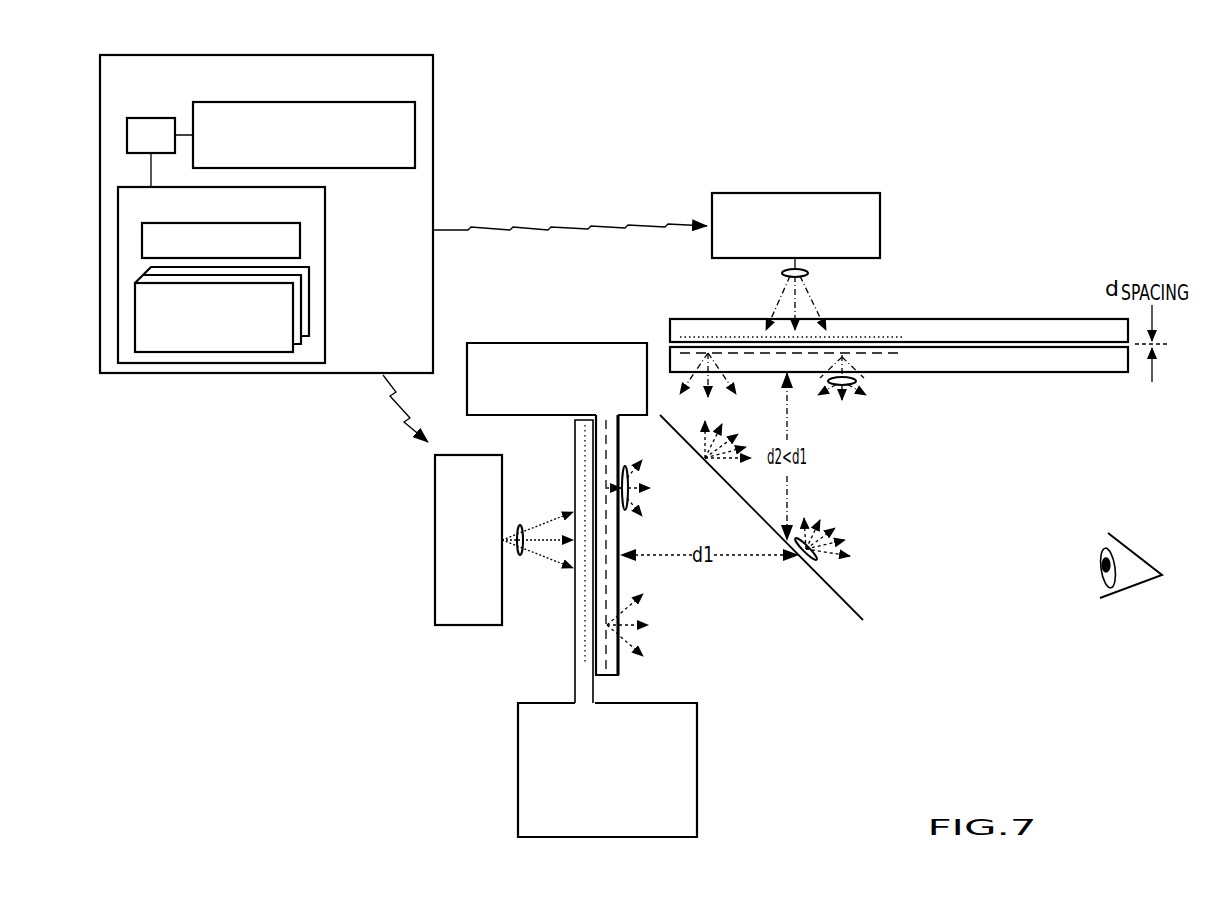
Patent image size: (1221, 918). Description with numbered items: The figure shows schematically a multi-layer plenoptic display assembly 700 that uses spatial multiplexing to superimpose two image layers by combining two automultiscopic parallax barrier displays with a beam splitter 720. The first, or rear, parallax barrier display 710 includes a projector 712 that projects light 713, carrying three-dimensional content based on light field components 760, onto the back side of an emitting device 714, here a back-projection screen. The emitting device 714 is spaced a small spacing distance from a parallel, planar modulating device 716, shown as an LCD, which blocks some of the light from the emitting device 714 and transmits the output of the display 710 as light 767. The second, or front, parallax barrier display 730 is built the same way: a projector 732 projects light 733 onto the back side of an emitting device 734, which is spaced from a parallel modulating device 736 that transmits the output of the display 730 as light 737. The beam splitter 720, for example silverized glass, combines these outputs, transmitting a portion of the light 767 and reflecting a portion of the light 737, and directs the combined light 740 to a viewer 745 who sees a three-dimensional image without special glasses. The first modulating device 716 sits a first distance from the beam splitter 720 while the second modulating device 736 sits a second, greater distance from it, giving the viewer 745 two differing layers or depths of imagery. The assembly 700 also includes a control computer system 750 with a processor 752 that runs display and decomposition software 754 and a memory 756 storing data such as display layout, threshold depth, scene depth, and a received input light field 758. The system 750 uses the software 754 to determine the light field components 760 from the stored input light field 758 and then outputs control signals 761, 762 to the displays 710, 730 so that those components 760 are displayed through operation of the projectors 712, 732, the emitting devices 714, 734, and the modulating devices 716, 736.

The display assembly 700 is at (88, 90).
The control computer system 750 is at (412, 53).
The processor 752 is at (127, 135).
The display and decomposition software 754 is at (415, 135).
The memory 756 is at (325, 201).
The input light field 758 is at (300, 240).
The light field components 760 is at (309, 300).
The control signals 761 is at (410, 412).
The control signals 762 is at (585, 231).
The second parallax barrier display 730 is at (1032, 131).
The projector 732 is at (781, 254).
The projected light 733 is at (808, 273).
The emitting device 734 is at (918, 319).
The modulating device 736 is at (1070, 372).
The output light 737 is at (858, 382).
The modulating device 716 is at (553, 343).
The output light 767 is at (629, 500).
The emitting device 714 is at (592, 830).
The projector 712 is at (435, 603).
The projected light 713 is at (520, 525).
The beam splitter 720 is at (822, 580).
The combined light 740 is at (822, 557).
The viewer 745 is at (1100, 600).
The first parallax barrier display 710 is at (264, 700).